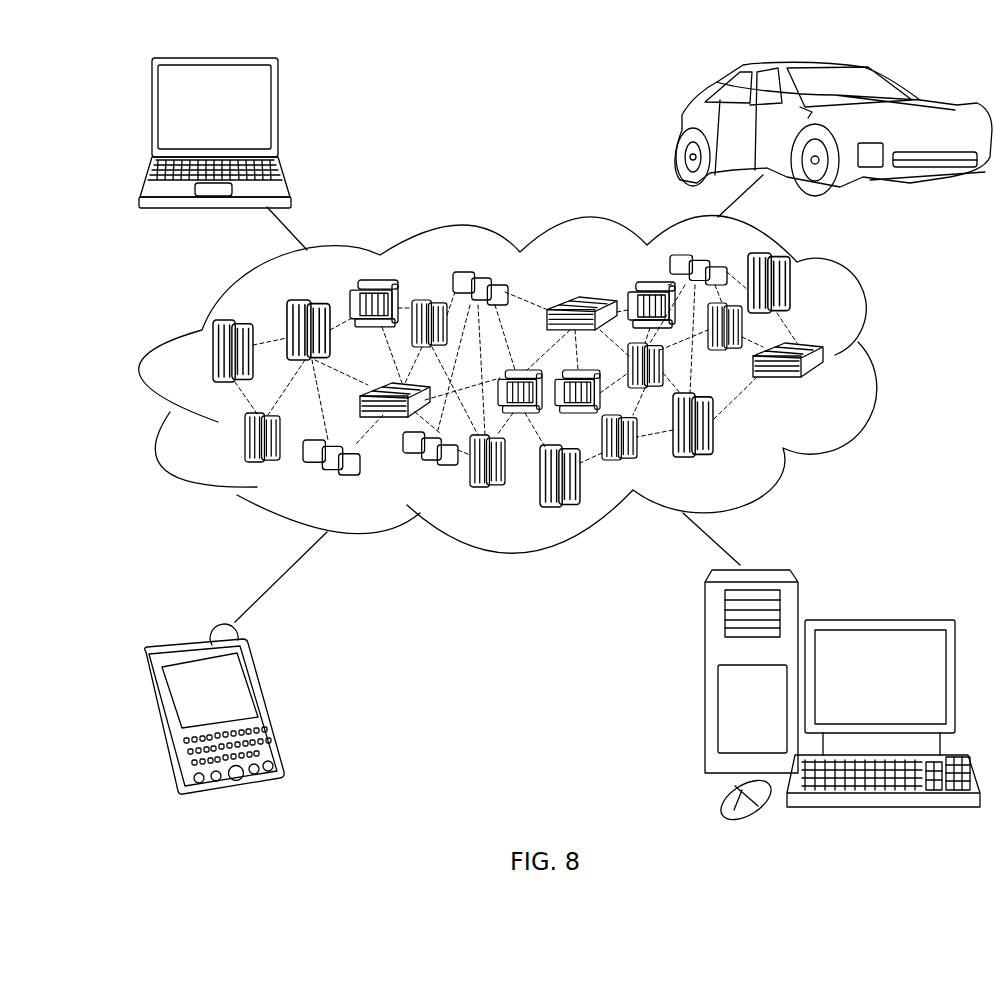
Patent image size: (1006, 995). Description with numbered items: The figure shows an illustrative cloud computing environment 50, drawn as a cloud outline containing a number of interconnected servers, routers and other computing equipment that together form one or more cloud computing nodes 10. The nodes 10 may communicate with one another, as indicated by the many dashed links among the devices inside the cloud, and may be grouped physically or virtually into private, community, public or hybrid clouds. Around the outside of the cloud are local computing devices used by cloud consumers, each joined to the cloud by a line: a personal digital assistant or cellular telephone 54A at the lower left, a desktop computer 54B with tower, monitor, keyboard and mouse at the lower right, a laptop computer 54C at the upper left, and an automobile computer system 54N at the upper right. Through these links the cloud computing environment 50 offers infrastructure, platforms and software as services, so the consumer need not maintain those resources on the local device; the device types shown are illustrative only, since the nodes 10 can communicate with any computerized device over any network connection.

The cloud computing node 10 is at (833, 390).
The cloud computing environment 50 is at (880, 360).
The personal digital assistant or cellular telephone 54A is at (268, 701).
The desktop computer 54B is at (880, 619).
The laptop computer 54C is at (279, 114).
The automobile computer system 54N is at (680, 131).